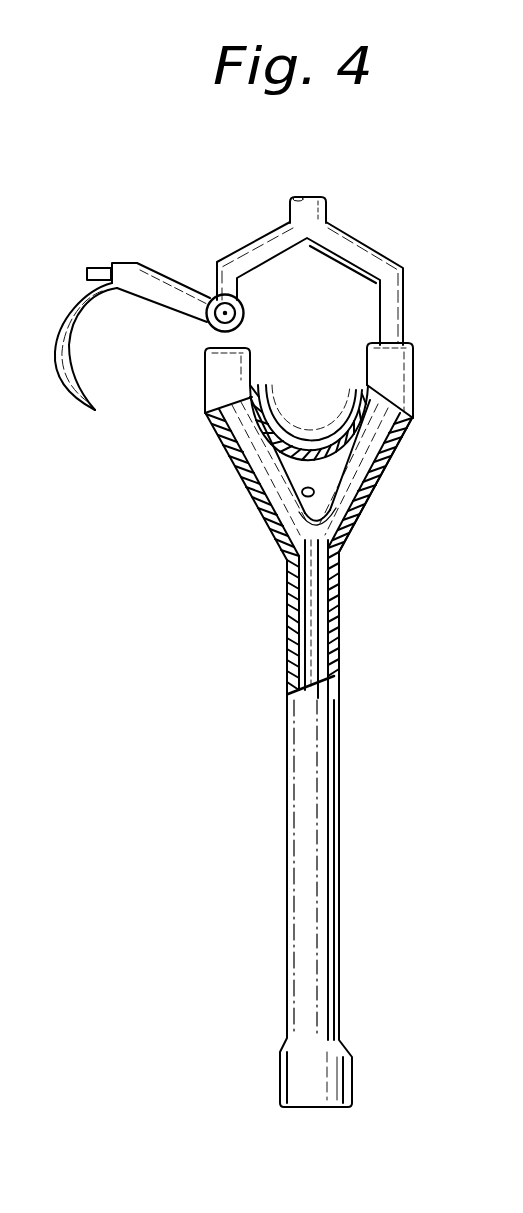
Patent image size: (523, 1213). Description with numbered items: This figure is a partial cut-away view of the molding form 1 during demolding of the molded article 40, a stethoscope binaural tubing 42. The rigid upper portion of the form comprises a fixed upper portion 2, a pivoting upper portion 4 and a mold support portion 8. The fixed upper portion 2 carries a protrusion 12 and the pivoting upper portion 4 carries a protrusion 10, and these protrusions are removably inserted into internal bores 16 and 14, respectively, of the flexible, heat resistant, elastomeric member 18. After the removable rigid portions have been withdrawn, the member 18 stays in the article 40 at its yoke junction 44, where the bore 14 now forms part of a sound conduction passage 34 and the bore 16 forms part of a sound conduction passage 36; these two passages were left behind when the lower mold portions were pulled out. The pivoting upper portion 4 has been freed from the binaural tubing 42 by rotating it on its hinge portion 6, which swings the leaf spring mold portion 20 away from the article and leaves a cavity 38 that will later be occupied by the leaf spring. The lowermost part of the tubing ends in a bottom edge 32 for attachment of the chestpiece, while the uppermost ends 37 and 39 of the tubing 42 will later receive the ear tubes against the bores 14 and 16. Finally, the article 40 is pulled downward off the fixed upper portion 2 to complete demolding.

The molding form 1 is at (238, 603).
The fixed upper portion 2 is at (404, 308).
The pivoting upper portion 4 is at (170, 277).
The hinge portion 6 is at (208, 326).
The mold support portion 8 is at (289, 213).
The protrusion 10 is at (99, 268).
The protrusion 12 is at (383, 430).
The internal bore 14 is at (232, 473).
The internal bore 16 is at (367, 493).
The flexible, heat resistant member 18 is at (257, 503).
The leaf spring mold portion 20 is at (53, 353).
The bottom edge 32 is at (333, 1107).
The sound conduction passage 34 is at (298, 637).
The sound conduction passage 36 is at (320, 622).
The uppermost end 37 is at (230, 347).
The cavity 38 is at (310, 443).
The uppermost end 39 is at (392, 343).
The molded article 40 is at (338, 911).
The binaural tubing 42 is at (338, 822).
The yoke junction 44 is at (320, 483).